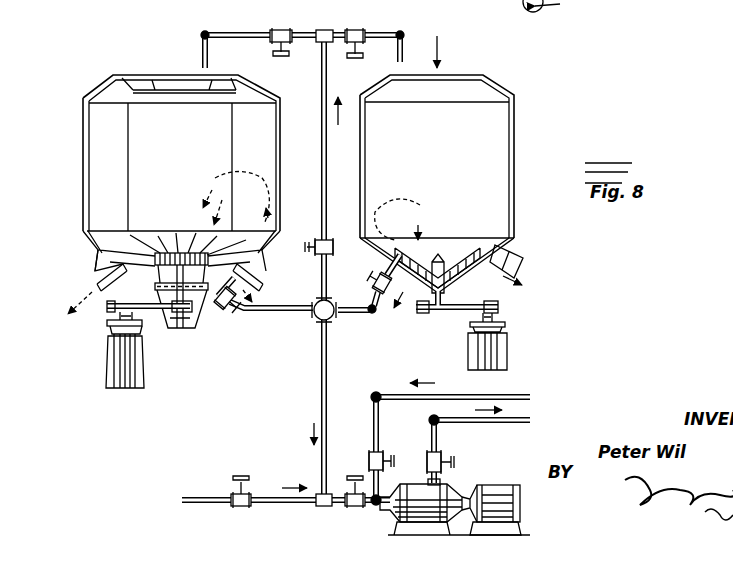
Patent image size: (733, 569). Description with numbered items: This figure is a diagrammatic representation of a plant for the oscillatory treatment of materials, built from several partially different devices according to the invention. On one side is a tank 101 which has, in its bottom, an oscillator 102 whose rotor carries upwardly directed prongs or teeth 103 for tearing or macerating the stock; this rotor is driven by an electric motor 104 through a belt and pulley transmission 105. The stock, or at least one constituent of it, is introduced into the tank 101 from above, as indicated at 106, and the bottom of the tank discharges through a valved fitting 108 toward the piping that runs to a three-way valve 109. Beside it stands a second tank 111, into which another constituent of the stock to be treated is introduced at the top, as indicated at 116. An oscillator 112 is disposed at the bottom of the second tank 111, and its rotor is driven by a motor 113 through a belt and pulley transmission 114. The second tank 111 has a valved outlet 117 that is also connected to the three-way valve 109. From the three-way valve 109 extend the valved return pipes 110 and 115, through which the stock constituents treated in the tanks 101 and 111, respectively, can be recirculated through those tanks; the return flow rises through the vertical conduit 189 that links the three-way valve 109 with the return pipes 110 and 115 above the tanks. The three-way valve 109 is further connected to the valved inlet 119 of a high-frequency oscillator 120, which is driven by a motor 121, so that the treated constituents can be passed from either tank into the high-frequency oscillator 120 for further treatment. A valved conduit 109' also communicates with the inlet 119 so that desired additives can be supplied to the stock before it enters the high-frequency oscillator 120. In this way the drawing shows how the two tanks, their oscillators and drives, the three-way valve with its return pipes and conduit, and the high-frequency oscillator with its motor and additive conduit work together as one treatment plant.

The tank 101 is at (88, 143).
The oscillator 102 is at (155, 253).
The prongs or teeth 103 is at (178, 253).
The electric motor 104 is at (112, 362).
The belt and pulley transmission 105 is at (197, 318).
The stock introduction point 106 is at (178, 68).
The valve 108 is at (229, 310).
The three-way valve 109 is at (307, 331).
The valved conduit 109' is at (285, 504).
The valved return pipe 110 is at (283, 29).
The second tank 111 is at (527, 85).
The oscillator 112 is at (462, 256).
The motor 113 is at (505, 350).
The belt and pulley transmission 114 is at (422, 313).
The valved return pipe 115 is at (356, 29).
The constituent introduction point 116 is at (438, 45).
The valved outlet 117 is at (372, 290).
The valved inlet 119 is at (352, 508).
The high-frequency oscillator 120 is at (413, 490).
The motor 121 is at (497, 495).
The main conduit 189 is at (384, 251).